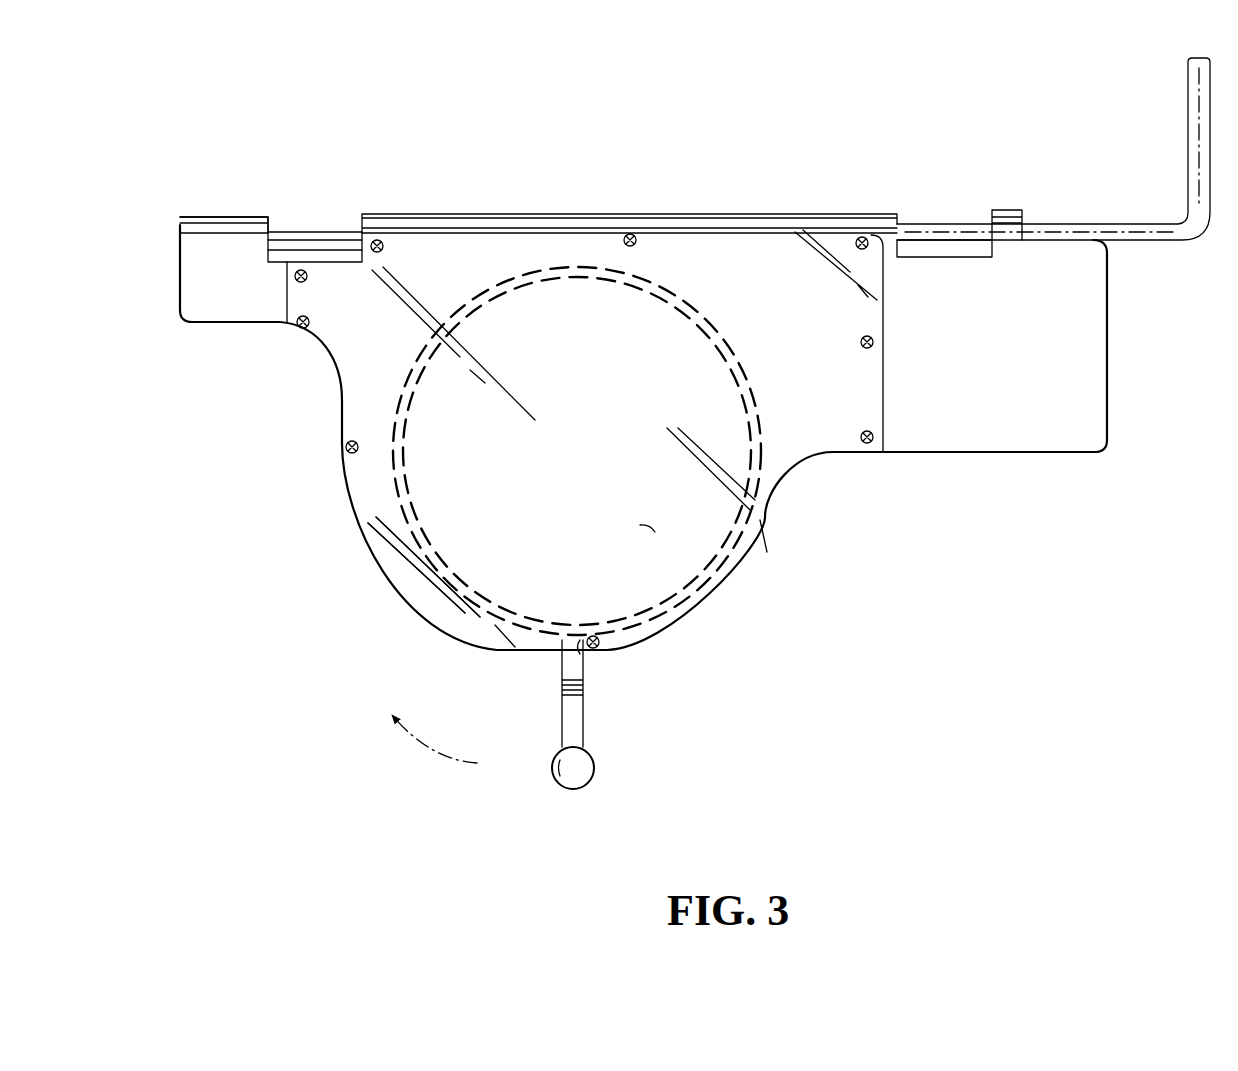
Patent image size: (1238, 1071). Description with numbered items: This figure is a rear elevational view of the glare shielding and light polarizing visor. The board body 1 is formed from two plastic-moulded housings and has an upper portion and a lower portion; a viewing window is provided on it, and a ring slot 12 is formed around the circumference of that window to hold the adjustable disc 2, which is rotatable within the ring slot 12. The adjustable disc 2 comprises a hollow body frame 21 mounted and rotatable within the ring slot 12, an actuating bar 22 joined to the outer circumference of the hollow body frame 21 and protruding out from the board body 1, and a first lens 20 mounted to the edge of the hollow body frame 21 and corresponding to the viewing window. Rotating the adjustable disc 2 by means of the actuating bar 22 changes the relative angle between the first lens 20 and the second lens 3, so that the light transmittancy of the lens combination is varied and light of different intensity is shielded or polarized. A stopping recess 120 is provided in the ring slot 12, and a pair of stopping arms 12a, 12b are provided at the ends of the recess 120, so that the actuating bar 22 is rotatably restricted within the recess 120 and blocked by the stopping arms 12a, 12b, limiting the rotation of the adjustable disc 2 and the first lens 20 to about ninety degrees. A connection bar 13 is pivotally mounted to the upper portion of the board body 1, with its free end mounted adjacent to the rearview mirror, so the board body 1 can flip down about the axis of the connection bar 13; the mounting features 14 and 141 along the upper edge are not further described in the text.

The board body 1 is at (857, 212).
The adjustable disc 2 is at (552, 770).
The second lens 3 is at (760, 268).
The ring slot 12 is at (760, 477).
The stopping arm 12a is at (395, 457).
The stopping arm 12b is at (583, 655).
The stopping recess 120 is at (393, 568).
The connection bar 13 is at (1143, 232).
The mounting lug 14 is at (268, 220).
The mounting block 141 is at (312, 240).
The first lens 20 is at (655, 532).
The hollow body frame 21 is at (757, 532).
The actuating bar 22 is at (571, 718).